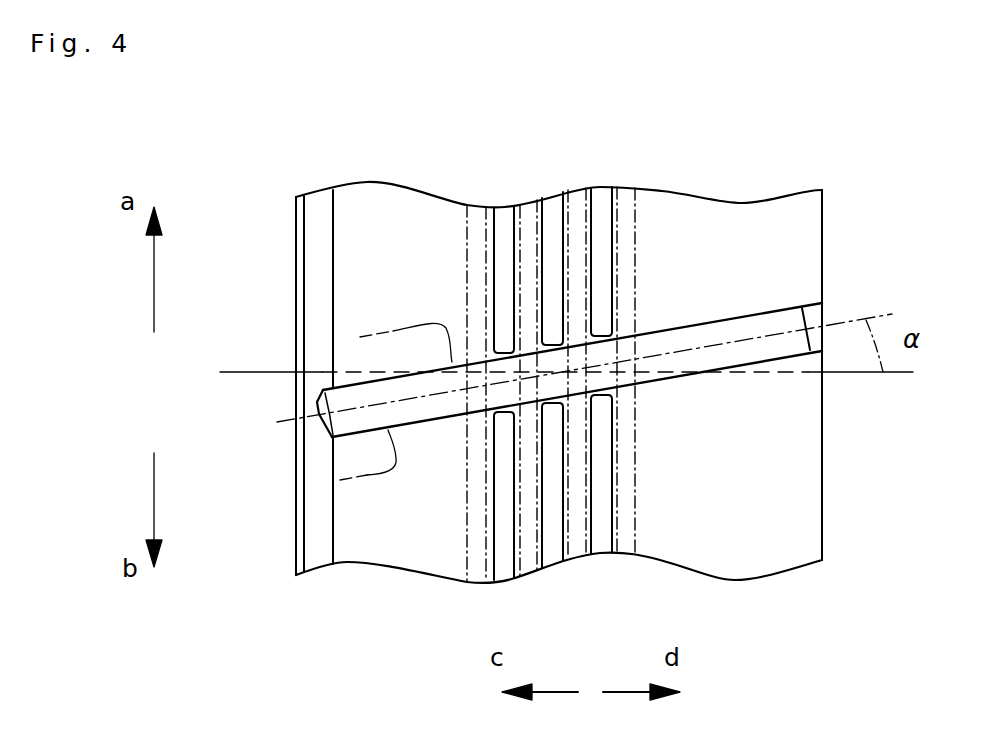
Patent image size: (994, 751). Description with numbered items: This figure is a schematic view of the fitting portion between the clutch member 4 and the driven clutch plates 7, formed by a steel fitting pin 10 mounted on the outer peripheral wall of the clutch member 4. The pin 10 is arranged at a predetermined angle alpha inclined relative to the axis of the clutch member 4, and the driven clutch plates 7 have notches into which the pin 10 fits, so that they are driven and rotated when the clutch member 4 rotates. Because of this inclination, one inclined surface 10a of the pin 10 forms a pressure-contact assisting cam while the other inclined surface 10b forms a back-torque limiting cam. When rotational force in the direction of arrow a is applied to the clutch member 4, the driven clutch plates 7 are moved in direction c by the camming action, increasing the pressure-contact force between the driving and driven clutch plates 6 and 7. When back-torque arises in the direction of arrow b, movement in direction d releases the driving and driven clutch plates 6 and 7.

The clutch member 4 is at (367, 206).
The driving clutch plates 6 is at (528, 566).
The driven clutch plates 7 is at (505, 207).
The fitting pin 10 is at (773, 322).
The inclined surface 10a is at (333, 335).
The inclined surface 10b is at (340, 480).